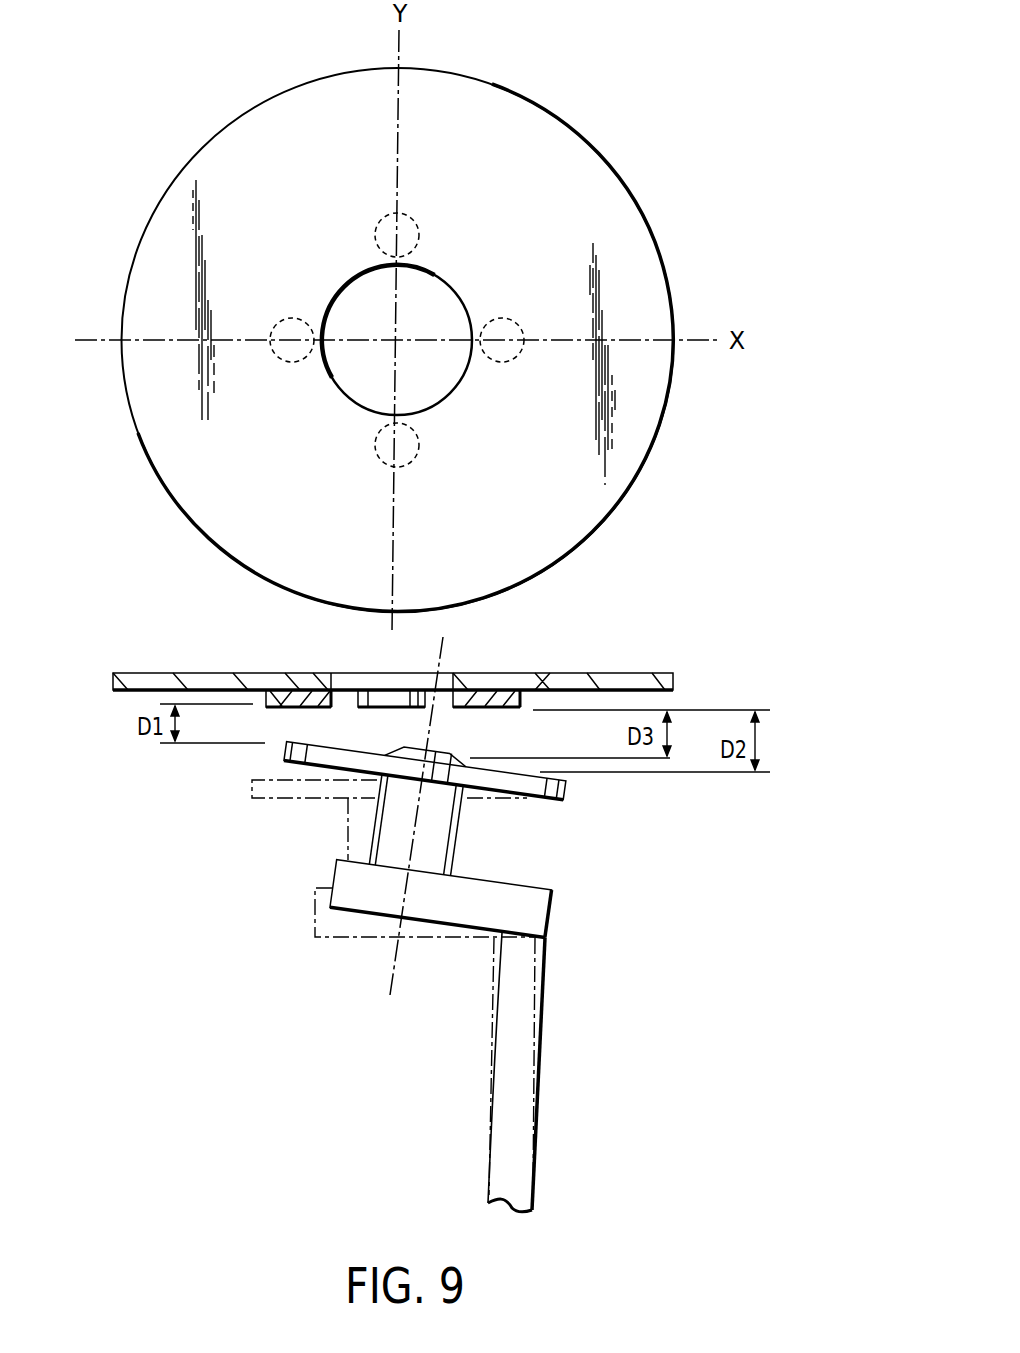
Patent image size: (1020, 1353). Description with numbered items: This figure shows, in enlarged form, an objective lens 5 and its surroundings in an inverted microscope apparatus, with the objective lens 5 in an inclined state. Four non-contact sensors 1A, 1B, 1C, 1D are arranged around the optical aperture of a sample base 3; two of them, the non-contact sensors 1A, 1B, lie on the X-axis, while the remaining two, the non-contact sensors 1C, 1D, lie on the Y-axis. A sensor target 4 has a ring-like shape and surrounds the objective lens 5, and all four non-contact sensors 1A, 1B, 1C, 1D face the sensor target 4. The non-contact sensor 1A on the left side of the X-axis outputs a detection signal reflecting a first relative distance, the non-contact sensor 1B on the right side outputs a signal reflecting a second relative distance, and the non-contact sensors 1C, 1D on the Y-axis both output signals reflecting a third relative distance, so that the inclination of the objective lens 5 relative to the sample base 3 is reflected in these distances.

The non-contact sensor 1A is at (278, 325).
The non-contact sensor 1B is at (517, 323).
The non-contact sensor 1C is at (416, 224).
The non-contact sensor 1D is at (415, 431).
The sample base 3 is at (306, 583).
The sensor target 4 is at (285, 760).
The objective lens 5 is at (397, 829).